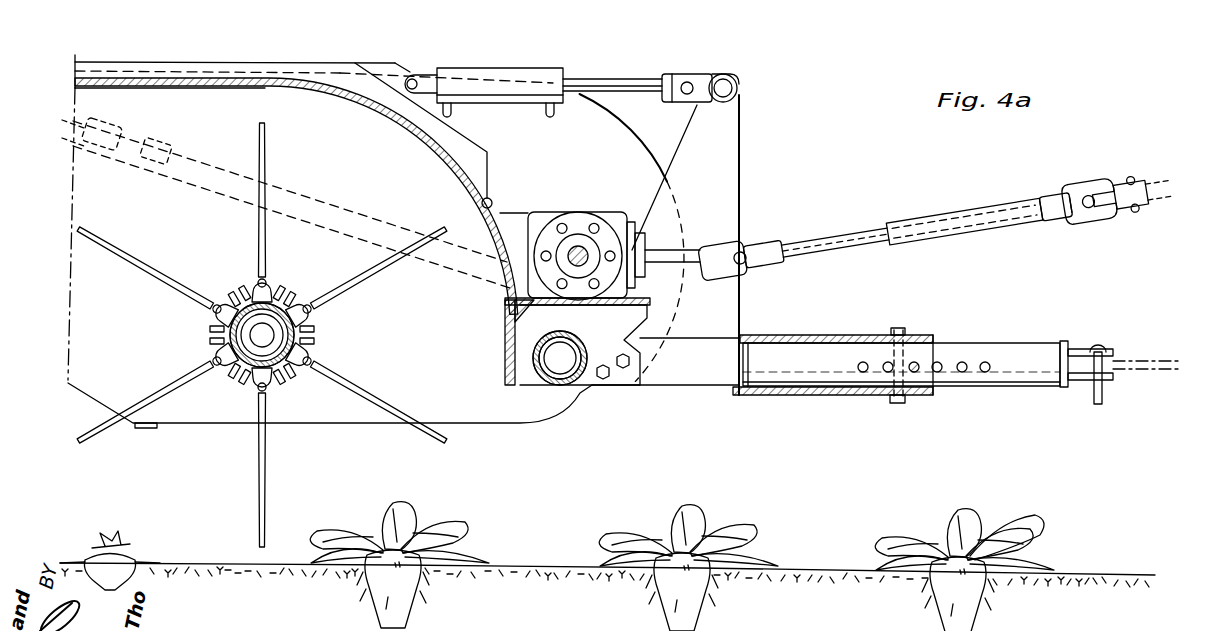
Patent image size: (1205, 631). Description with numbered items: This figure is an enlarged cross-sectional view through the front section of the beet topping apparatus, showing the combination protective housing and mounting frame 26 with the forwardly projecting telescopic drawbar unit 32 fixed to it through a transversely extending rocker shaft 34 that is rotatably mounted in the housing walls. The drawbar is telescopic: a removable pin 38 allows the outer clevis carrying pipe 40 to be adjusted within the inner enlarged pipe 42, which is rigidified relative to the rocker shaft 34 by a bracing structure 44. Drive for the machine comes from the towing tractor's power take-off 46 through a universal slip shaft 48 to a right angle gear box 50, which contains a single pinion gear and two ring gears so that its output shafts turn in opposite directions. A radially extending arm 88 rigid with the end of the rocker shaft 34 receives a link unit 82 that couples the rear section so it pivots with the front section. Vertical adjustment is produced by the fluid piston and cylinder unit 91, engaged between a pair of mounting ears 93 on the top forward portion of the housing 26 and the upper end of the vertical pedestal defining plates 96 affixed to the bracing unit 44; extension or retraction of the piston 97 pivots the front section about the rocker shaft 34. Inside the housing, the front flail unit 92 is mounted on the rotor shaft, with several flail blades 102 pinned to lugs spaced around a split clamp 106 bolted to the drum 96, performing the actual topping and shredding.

The front housing 26 is at (482, 417).
The telescopic drawbar unit 32 is at (960, 338).
The rocker shaft 34 is at (556, 400).
The pin 38 is at (917, 373).
The outer clevis carrying pipe 40 is at (1022, 388).
The inner enlarged pipe 42 is at (836, 396).
The bracing structure 44 is at (718, 395).
The power take-off 46 is at (1148, 210).
The universal slip shaft 48 is at (942, 218).
The right angle gear box 50 is at (550, 212).
The link unit 82 is at (306, 192).
The radially extending arm 88 is at (513, 330).
The fluid piston and cylinder unit 91 is at (585, 77).
The front flail unit 92 is at (245, 428).
The mounting ears 93 is at (396, 70).
The vertical pedestal defining plates / front rotor shaft 96 is at (292, 298).
The piston 97 is at (630, 84).
The flail blade 102 is at (262, 468).
The split clamp 106 is at (314, 341).